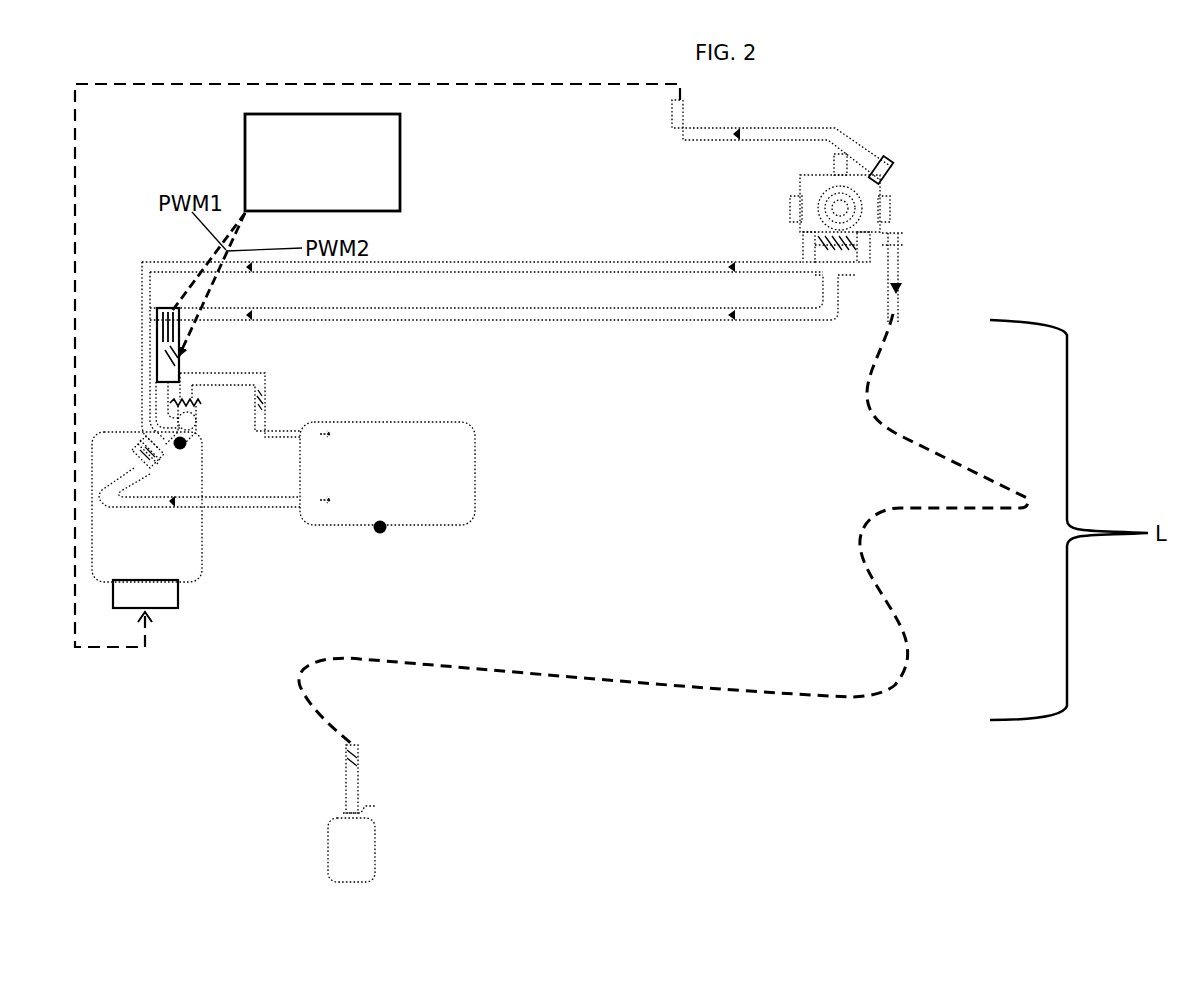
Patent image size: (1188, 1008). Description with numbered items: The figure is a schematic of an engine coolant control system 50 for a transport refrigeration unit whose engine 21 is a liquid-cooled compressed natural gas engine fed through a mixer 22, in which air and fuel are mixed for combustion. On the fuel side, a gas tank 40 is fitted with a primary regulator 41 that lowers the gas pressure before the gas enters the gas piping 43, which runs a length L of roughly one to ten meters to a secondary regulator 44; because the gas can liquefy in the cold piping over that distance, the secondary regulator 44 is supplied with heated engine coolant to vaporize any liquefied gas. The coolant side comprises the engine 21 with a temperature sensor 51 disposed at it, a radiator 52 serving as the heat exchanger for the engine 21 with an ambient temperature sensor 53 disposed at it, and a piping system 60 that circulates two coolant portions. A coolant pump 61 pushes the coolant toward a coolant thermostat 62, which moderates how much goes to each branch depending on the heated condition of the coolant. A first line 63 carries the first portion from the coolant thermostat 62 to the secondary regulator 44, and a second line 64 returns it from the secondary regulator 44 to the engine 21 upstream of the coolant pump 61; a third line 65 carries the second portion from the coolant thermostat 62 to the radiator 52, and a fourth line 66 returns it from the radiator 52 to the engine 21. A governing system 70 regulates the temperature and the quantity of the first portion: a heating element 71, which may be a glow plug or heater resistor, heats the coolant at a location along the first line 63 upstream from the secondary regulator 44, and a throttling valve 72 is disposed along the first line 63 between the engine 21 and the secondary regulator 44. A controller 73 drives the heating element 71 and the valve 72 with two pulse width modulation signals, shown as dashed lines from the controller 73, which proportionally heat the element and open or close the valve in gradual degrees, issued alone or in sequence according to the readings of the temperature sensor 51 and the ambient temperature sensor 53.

The engine 21 is at (147, 507).
The mixer 22 is at (178, 597).
The gas tank 40 is at (351, 850).
The primary regulator 41 is at (362, 746).
The gas piping 43 is at (903, 437).
The secondary regulator 44 is at (885, 203).
The engine coolant control system 50 is at (480, 323).
The temperature sensor 51 is at (184, 448).
The radiator 52 is at (387, 473).
The ambient temperature sensor 53 is at (386, 532).
The piping system 60 is at (147, 265).
The coolant pump 61 is at (142, 450).
The coolant thermostat 62 is at (198, 421).
The first line 63 is at (665, 320).
The second line 64 is at (637, 262).
The third line 65 is at (262, 377).
The fourth line 66 is at (260, 507).
The governing system 70 is at (156, 352).
The heating element 71 is at (161, 322).
The valve 72 is at (168, 362).
The controller 73 is at (322, 162).